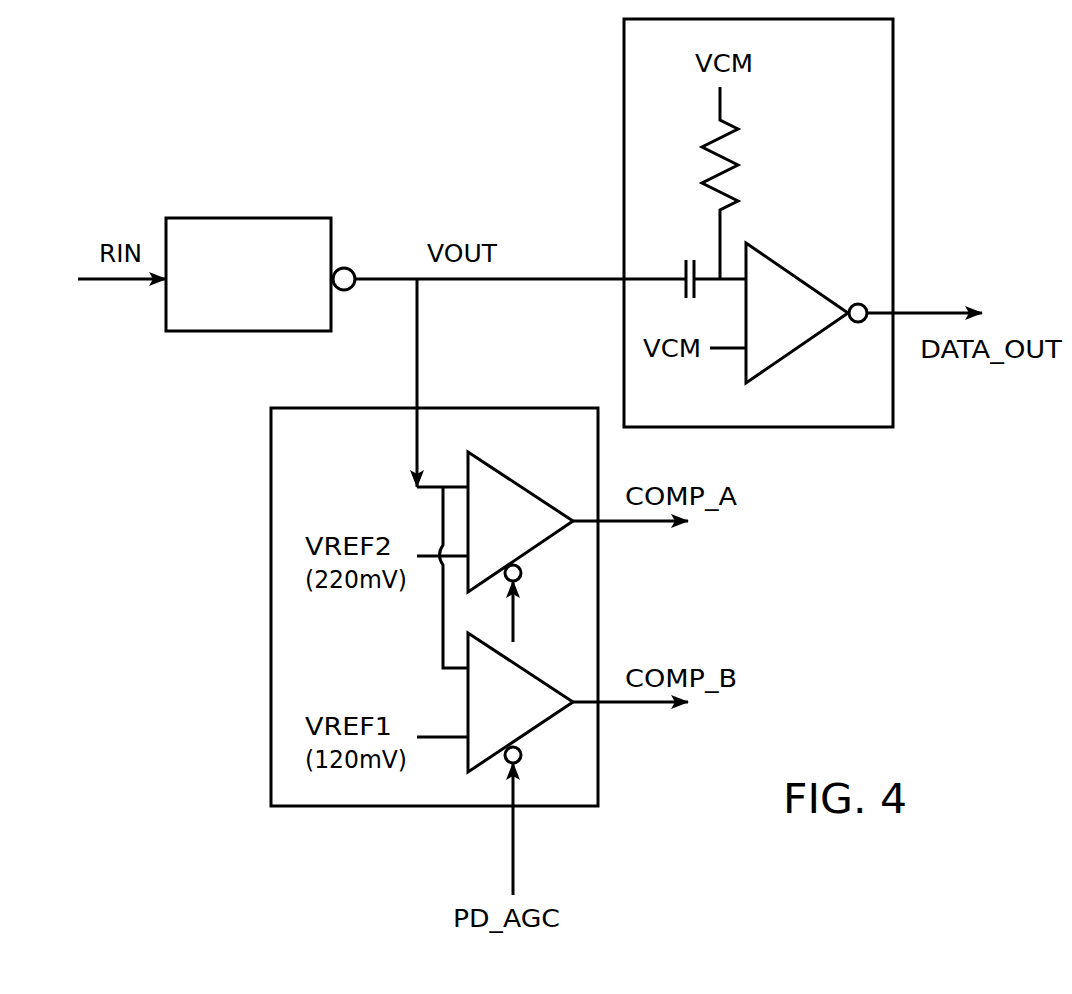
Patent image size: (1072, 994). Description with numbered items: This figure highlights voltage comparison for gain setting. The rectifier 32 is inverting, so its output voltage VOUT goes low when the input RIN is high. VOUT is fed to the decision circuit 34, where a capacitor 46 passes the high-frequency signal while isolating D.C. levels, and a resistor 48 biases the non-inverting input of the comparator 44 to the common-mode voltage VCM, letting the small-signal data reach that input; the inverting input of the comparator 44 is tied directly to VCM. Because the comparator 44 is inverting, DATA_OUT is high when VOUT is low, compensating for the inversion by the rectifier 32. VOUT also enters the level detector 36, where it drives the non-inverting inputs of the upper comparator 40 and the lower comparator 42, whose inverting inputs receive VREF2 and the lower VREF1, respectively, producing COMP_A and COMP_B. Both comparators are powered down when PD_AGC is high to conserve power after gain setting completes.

The rectifier 32 is at (248, 311).
The decision circuit 34 is at (843, 205).
The level detector 36 is at (567, 787).
The upper comparator 40 is at (517, 530).
The lower comparator 42 is at (517, 712).
The comparator 44 is at (793, 320).
The capacitor 46 is at (683, 268).
The resistor 48 is at (738, 151).